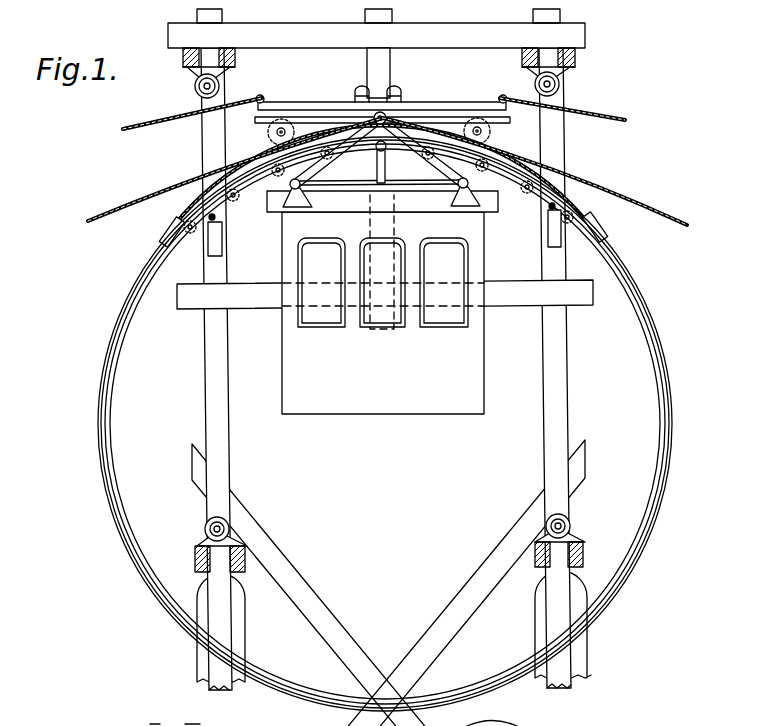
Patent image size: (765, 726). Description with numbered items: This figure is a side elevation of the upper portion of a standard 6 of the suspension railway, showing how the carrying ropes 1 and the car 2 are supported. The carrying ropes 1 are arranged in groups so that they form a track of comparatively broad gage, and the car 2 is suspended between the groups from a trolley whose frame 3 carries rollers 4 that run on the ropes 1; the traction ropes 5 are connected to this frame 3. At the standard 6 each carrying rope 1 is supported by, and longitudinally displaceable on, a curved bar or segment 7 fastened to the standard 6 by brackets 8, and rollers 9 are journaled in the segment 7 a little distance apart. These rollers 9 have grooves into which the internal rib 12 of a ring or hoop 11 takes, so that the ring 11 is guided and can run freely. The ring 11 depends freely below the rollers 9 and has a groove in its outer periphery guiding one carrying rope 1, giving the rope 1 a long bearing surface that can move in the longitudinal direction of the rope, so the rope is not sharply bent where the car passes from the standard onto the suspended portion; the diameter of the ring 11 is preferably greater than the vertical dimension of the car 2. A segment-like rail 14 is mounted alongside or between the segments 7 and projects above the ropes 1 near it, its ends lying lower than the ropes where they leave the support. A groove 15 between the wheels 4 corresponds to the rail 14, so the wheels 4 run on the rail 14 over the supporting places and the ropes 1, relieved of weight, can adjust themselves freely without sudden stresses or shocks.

The carrying rope 1 is at (102, 221).
The car 2 is at (395, 412).
The frame 3 is at (423, 117).
The rollers 4 is at (267, 133).
The traction ropes 5 is at (155, 121).
The standard 6 is at (207, 356).
The curved bar or segment 7 is at (591, 236).
The brackets 8 is at (222, 248).
The rollers 9 is at (229, 200).
The ring or hoop 11 is at (106, 502).
The internal rib 12 is at (667, 419).
The segment-like rail 14 is at (166, 231).
The groove 15 is at (172, 725).